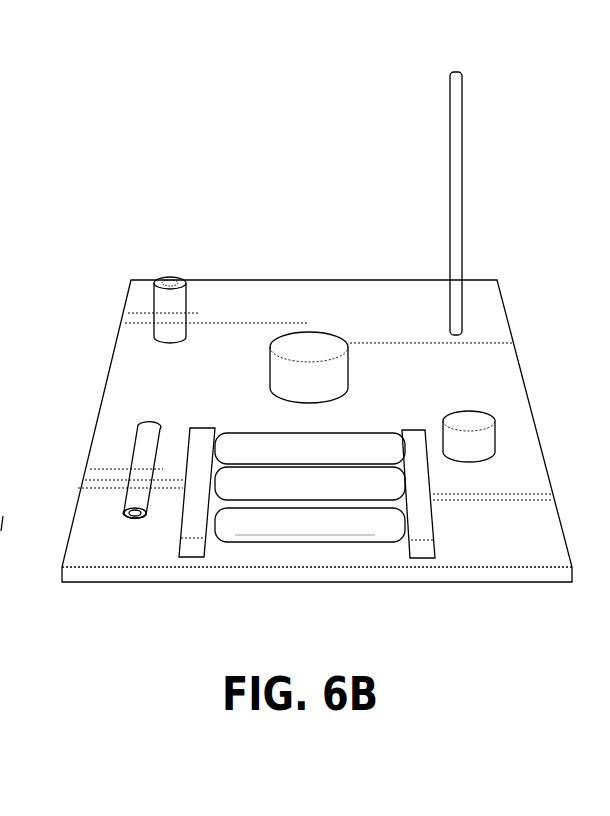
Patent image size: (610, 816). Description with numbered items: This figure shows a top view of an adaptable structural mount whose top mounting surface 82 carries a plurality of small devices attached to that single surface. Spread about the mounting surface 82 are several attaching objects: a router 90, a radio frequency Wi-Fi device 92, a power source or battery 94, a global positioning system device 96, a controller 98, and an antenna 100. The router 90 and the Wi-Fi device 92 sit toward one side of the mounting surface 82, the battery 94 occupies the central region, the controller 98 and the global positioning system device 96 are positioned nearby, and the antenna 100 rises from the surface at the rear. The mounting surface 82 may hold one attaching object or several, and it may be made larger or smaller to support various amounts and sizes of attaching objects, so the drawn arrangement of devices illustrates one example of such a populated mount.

The mounting surface 82 is at (273, 298).
The router 90 is at (167, 300).
The radio frequency Wi-Fi device 92 is at (145, 450).
The power source or battery 94 is at (382, 530).
The global positioning system device 96 is at (483, 436).
The controller 98 is at (310, 342).
The antenna 100 is at (460, 207).